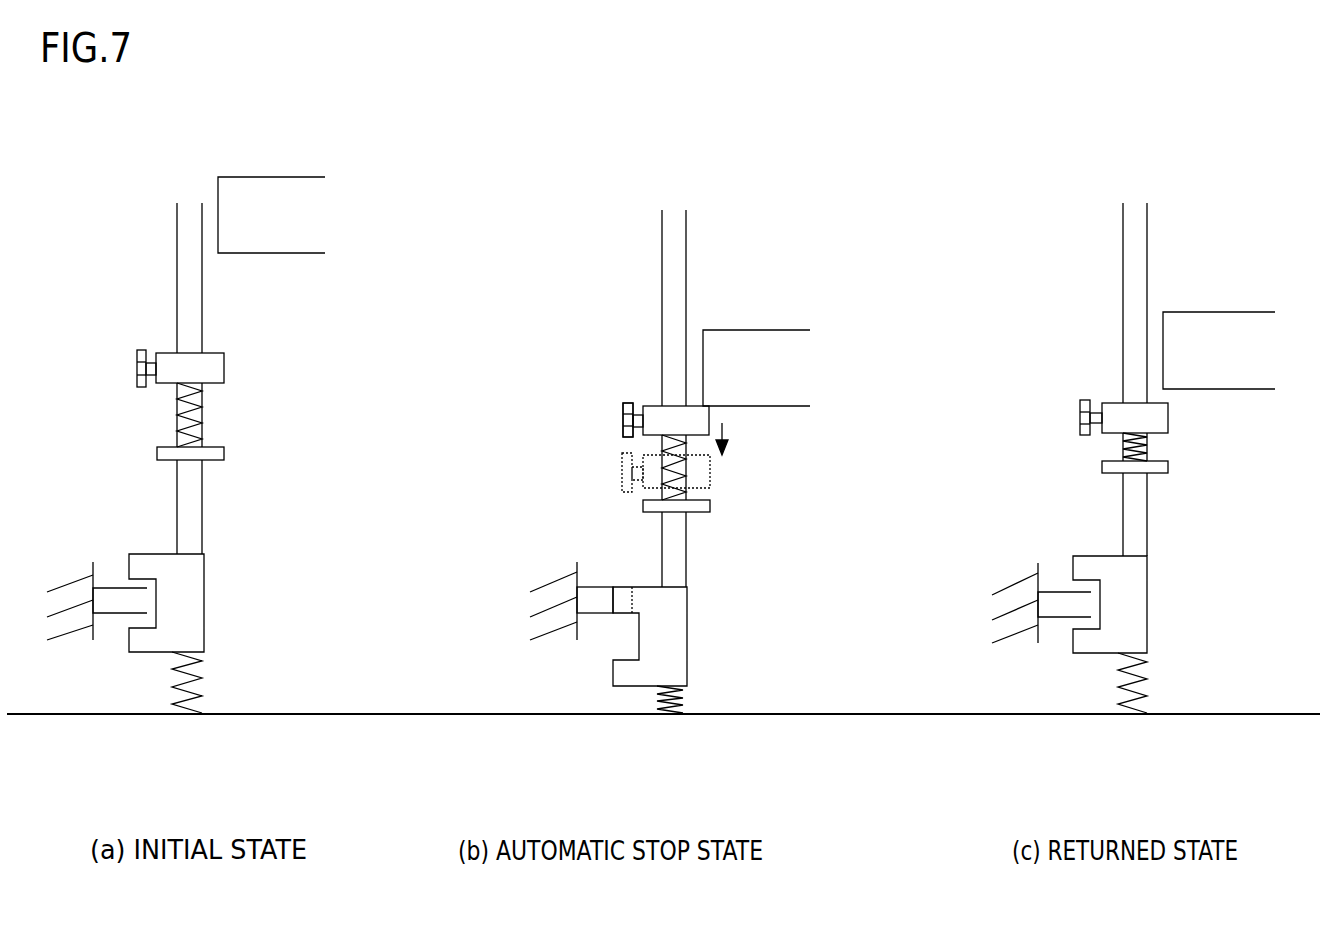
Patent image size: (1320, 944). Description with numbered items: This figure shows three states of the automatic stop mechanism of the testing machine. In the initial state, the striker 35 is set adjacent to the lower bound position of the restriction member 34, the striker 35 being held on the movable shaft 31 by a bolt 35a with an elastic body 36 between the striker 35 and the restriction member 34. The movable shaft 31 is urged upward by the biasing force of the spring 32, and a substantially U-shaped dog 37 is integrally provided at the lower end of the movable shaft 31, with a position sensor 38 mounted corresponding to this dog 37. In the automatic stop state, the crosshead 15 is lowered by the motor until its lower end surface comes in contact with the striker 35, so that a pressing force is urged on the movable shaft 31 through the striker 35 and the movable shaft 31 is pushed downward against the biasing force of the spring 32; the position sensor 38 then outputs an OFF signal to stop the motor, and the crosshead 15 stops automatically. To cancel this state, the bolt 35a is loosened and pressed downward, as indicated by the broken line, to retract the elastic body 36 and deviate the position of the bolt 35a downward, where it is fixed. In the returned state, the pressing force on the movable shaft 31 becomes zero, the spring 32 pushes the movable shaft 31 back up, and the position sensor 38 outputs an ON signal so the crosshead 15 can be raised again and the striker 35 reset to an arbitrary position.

The crosshead 15 is at (278, 177).
The movable shaft 31 is at (177, 230).
The spring 32 is at (210, 682).
The restriction member 34 is at (157, 455).
The striker 35 is at (224, 365).
The bolt 35a is at (618, 417).
The elastic body 36 is at (208, 430).
The dog 37 is at (204, 602).
The position sensor 38 is at (575, 563).